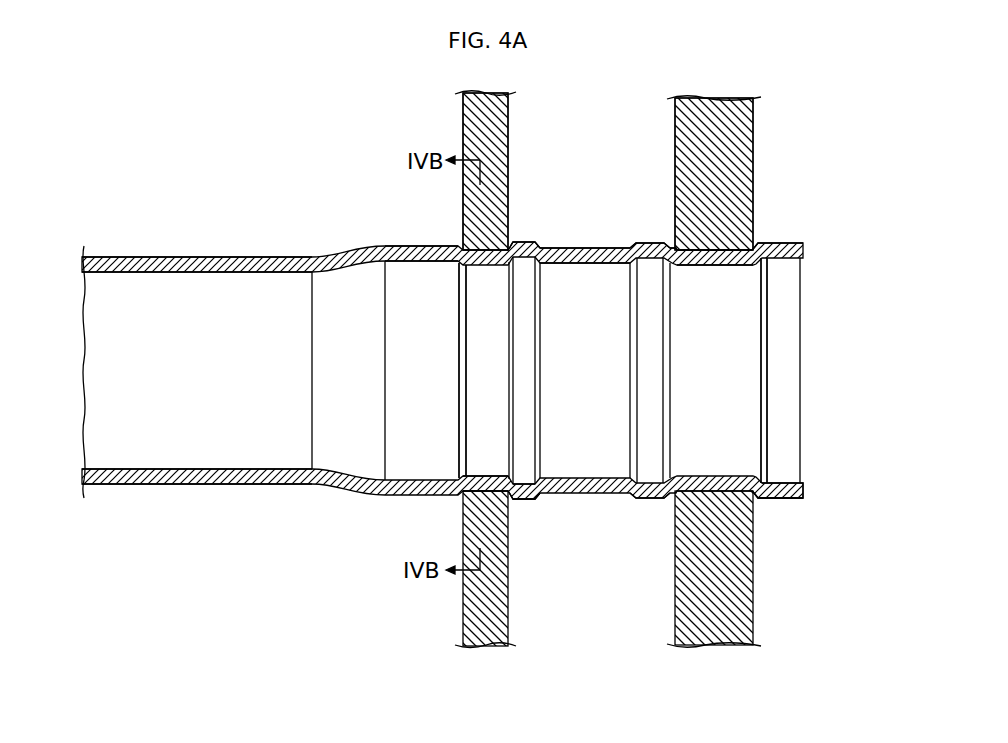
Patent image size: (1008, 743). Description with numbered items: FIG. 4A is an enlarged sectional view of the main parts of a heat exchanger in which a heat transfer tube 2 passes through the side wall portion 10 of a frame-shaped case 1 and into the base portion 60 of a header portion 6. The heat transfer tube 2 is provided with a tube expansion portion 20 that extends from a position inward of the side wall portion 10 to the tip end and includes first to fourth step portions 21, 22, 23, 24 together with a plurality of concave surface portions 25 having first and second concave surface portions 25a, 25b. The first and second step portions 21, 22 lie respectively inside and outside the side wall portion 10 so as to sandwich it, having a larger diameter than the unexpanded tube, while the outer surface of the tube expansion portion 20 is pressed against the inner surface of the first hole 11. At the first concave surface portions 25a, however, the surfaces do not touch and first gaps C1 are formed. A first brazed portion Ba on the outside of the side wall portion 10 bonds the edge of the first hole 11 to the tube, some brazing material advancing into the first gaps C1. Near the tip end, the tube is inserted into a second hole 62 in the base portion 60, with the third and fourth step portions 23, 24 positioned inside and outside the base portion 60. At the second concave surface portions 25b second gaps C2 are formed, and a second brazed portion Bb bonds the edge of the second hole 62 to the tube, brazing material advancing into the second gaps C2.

The case 1 is at (510, 128).
The side wall portion 10 is at (492, 152).
The first hole 11 is at (485, 360).
The heat transfer tube 2 is at (212, 257).
The tube expansion portion 20 is at (611, 247).
The first step portion 21 is at (458, 498).
The second step portion 22 is at (527, 502).
The third step portion 23 is at (656, 500).
The fourth step portion 24 is at (781, 499).
The concave surface portions 25 is at (563, 247).
The first concave surface portion 25a is at (477, 268).
The second concave surface portion 25b is at (740, 270).
The header portion 6 is at (676, 135).
The base portion 60 is at (735, 150).
The second hole 62 is at (745, 372).
The first brazed portion Ba is at (517, 246).
The second brazed portion Bb is at (770, 246).
The first gap C1 is at (497, 268).
The second gap C2 is at (700, 273).